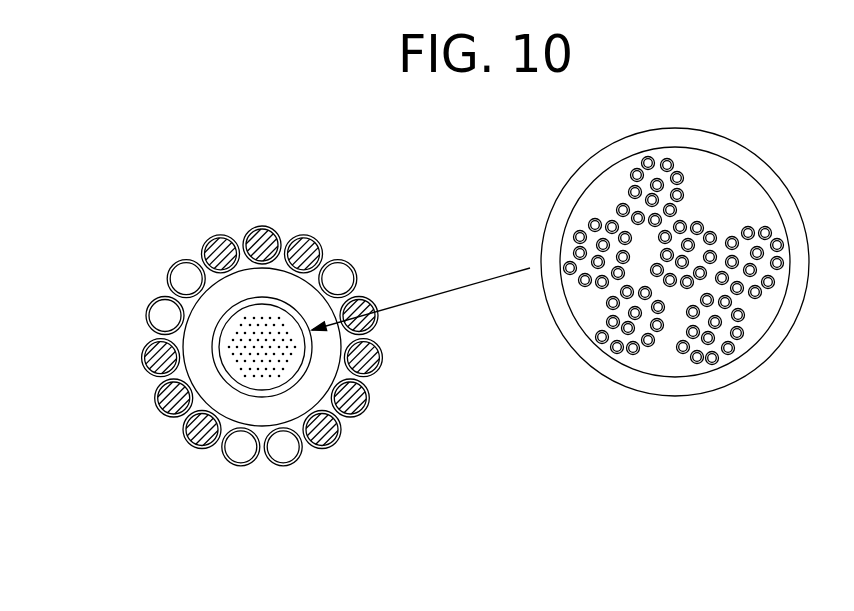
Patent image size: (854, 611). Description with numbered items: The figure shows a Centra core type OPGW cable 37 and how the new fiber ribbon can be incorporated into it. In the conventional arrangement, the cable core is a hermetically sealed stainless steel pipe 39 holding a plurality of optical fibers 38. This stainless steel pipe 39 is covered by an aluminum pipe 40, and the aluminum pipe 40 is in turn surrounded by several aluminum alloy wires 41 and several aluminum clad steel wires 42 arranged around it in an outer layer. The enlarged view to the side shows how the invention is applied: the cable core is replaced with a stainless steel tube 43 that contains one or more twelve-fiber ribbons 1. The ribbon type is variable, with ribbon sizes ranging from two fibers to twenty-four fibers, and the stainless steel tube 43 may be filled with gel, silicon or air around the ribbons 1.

The fiber ribbon 1 is at (743, 333).
The Centra core type OPGW cable 37 is at (158, 428).
The optical fibers 38 is at (240, 327).
The stainless steel pipe 39 is at (257, 295).
The aluminum pipe 40 is at (291, 290).
The aluminum alloy wires 41 is at (353, 307).
The aluminum clad steel wires 42 is at (380, 360).
The stainless steel tube 43 is at (767, 166).